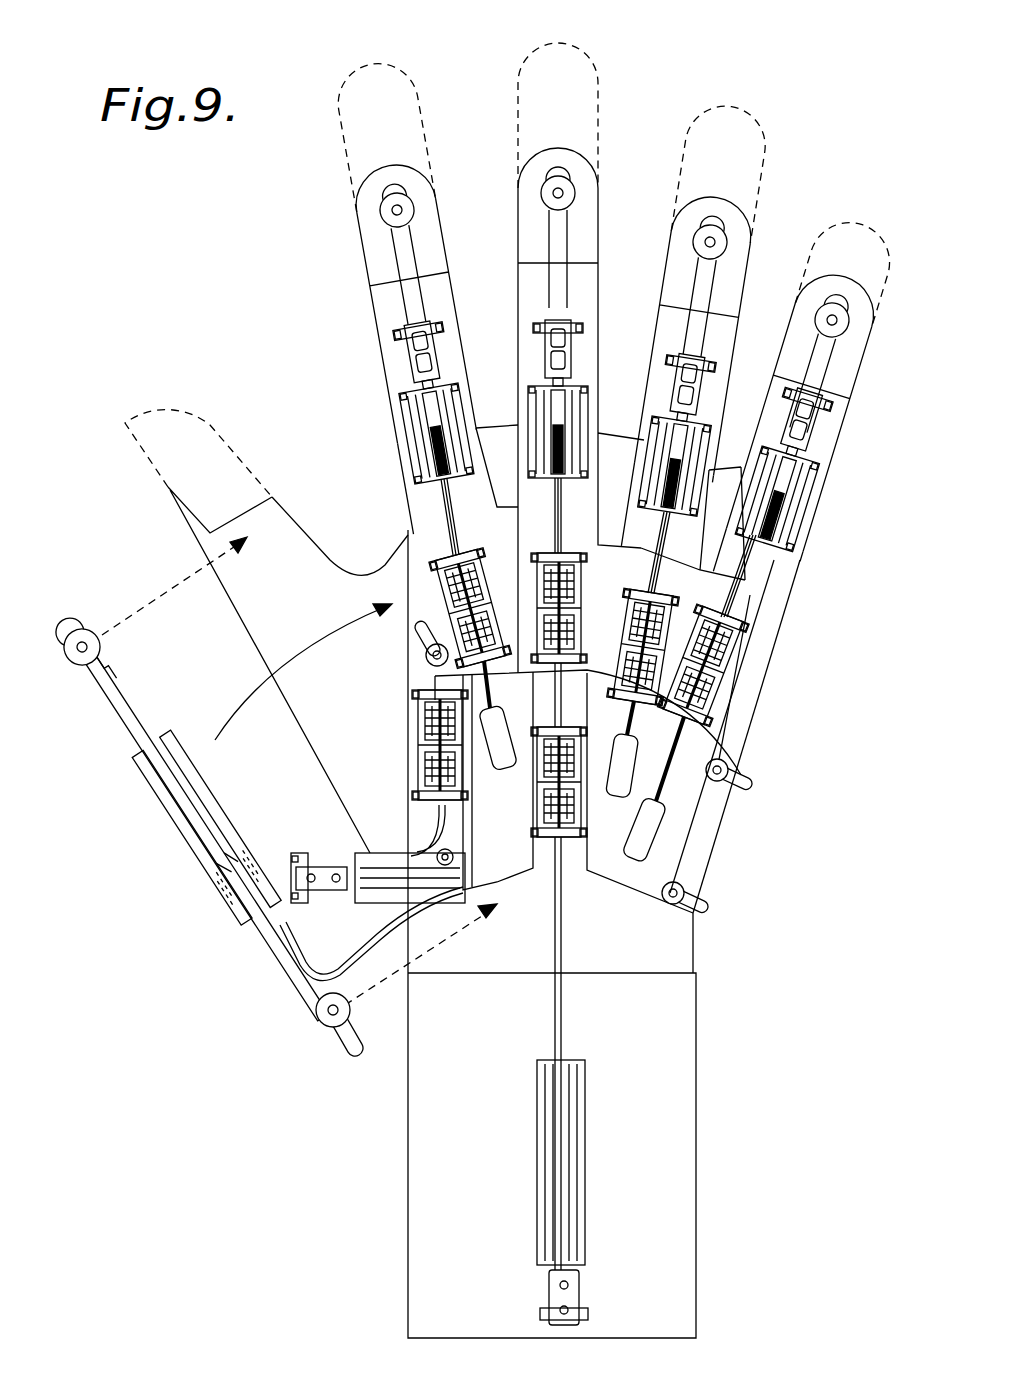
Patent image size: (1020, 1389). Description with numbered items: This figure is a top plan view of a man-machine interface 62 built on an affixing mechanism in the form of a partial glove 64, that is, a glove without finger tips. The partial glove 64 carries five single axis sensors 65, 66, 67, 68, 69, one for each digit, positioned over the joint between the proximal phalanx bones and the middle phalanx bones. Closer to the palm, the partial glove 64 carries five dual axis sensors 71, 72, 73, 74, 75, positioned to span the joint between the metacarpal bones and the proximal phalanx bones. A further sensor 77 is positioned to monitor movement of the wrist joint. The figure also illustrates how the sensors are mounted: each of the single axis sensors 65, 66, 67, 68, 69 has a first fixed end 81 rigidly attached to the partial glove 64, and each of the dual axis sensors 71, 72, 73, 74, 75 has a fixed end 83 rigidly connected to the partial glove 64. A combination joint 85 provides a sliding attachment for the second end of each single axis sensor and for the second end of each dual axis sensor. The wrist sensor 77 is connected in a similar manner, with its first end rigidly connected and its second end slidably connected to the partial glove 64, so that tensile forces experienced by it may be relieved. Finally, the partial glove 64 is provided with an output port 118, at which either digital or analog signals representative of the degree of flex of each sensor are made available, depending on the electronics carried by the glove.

The man-machine interface 62 is at (228, 334).
The partial glove 64 is at (693, 993).
The single axis sensor 65 is at (123, 688).
The single axis sensor 66 is at (395, 262).
The single axis sensor 67 is at (518, 262).
The single axis sensor 68 is at (687, 302).
The single axis sensor 69 is at (827, 385).
The dual axis sensor 71 is at (440, 500).
The dual axis sensor 72 is at (553, 492).
The dual axis sensor 73 is at (747, 575).
The dual axis sensor 74 is at (745, 612).
The dual axis sensor 75 is at (250, 905).
The wrist sensor 77 is at (583, 1163).
The first fixed end 81 is at (378, 212).
The fixed end 83 is at (440, 568).
The combination joint 85 is at (405, 400).
The output port 118 is at (328, 852).